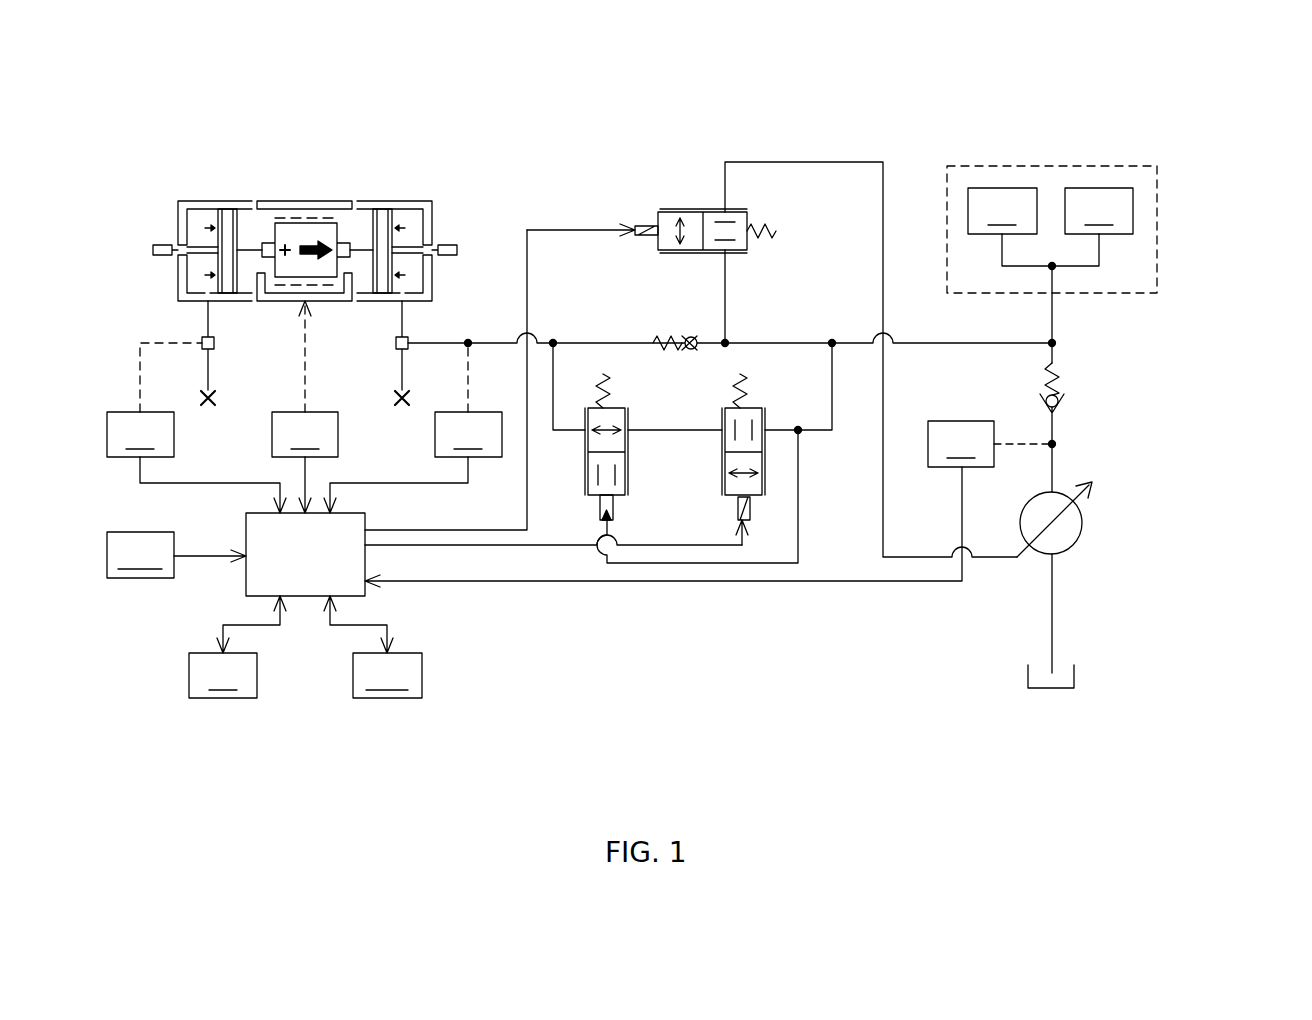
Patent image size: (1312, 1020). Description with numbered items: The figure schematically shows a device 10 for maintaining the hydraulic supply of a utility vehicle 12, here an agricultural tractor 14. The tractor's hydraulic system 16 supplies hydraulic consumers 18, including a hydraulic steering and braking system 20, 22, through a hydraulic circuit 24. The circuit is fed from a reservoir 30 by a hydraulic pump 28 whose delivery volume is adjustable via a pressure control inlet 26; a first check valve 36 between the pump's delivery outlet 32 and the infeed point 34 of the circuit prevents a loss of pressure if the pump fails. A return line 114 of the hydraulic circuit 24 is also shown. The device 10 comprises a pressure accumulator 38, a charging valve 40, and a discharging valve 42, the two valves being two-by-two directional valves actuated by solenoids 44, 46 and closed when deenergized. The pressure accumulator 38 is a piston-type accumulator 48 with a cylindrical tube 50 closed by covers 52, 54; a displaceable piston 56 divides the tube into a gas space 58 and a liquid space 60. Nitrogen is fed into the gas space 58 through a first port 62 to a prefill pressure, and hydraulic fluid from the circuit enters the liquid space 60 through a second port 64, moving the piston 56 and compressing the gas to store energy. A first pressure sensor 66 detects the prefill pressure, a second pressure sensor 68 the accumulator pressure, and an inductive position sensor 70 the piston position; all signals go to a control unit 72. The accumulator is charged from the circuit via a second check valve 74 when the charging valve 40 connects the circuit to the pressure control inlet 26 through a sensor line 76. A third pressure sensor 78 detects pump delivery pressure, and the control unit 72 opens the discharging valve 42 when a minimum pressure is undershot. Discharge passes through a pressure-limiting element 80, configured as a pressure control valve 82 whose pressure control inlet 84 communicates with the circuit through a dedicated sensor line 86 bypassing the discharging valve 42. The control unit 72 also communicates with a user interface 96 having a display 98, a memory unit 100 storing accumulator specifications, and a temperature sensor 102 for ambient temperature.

The device 10 is at (598, 112).
The utility vehicle 12 is at (259, 113).
The agricultural tractor 14 is at (632, 714).
The hydraulic system 16 is at (1183, 253).
The hydraulic consumers 18 is at (1157, 203).
The hydraulic steering system 20 is at (1010, 227).
The hydraulic braking system 22 is at (1091, 229).
The hydraulic circuit 24 is at (930, 338).
The pressure control inlet 26 is at (912, 553).
The hydraulic pump 28 is at (1085, 523).
The reservoir 30 is at (1076, 680).
The delivery outlet 32 is at (1058, 490).
The infeed point 34 is at (1060, 345).
The first check valve 36 is at (1060, 390).
The pressure accumulator 38 is at (403, 112).
The charging valve 40 is at (748, 222).
The discharging valve 42 is at (758, 402).
The solenoid 44 is at (645, 224).
The solenoid 46 is at (738, 510).
The piston-type accumulator 48 is at (283, 202).
The cylindrical tube 50 is at (378, 202).
The cover 52 is at (180, 230).
The cover 54 is at (430, 230).
The piston 56 is at (297, 253).
The gas space 58 is at (197, 218).
The liquid space 60 is at (413, 218).
The first port 62 is at (215, 405).
The second port 64 is at (405, 405).
The first pressure sensor 66 is at (196, 428).
The second pressure sensor 68 is at (413, 428).
The inductive position sensor 70 is at (305, 407).
The control unit 72 is at (246, 580).
The second check valve 74 is at (684, 352).
The sensor line 76 is at (822, 162).
The third pressure sensor 78 is at (708, 504).
The pressure-limiting element 80 is at (578, 455).
The pressure control valve 82 is at (598, 402).
The pressure control inlet 84 is at (614, 512).
The sensor line 86 is at (800, 540).
The user interface 96 is at (235, 705).
The display 98 is at (223, 675).
The memory unit 100 is at (387, 675).
The temperature sensor 102 is at (176, 555).
The return line 114 is at (992, 583).